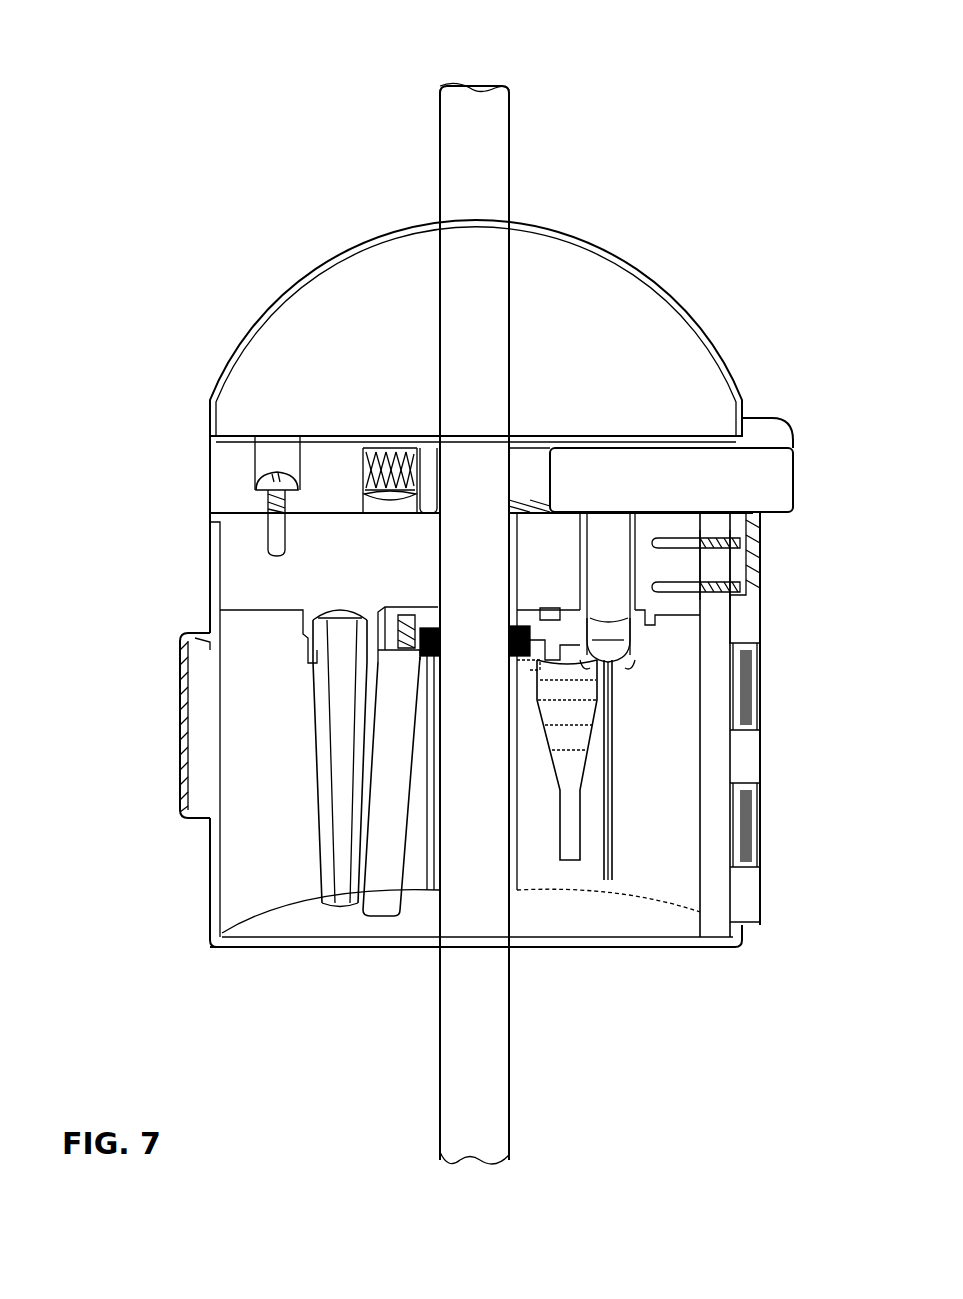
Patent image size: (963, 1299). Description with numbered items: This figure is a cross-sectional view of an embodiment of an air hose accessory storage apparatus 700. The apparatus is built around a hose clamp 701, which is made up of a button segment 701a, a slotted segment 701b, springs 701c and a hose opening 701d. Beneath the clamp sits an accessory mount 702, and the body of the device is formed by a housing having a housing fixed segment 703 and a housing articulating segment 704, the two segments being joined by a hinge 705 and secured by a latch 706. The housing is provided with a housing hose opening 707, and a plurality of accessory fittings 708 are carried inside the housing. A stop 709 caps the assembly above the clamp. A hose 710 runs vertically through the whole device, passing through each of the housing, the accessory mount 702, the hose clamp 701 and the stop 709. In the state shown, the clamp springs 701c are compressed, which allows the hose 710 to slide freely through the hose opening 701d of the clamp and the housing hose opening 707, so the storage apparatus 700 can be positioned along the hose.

The air hose accessory storage apparatus 700 is at (116, 72).
The hose clamp 701 is at (208, 473).
The button segment 701a is at (671, 480).
The slotted segment 701b is at (331, 475).
The springs 701c is at (398, 444).
The hose opening 701d is at (524, 464).
The accessory mount 702 is at (271, 531).
The housing fixed segment 703 is at (700, 845).
The housing articulating segment 704 is at (339, 763).
The hinge 705 is at (806, 709).
The latch 706 is at (180, 690).
The housing hose opening 707 is at (534, 972).
The accessory fittings 708 is at (633, 672).
The stop 709 is at (476, 328).
The hose 710 is at (505, 160).